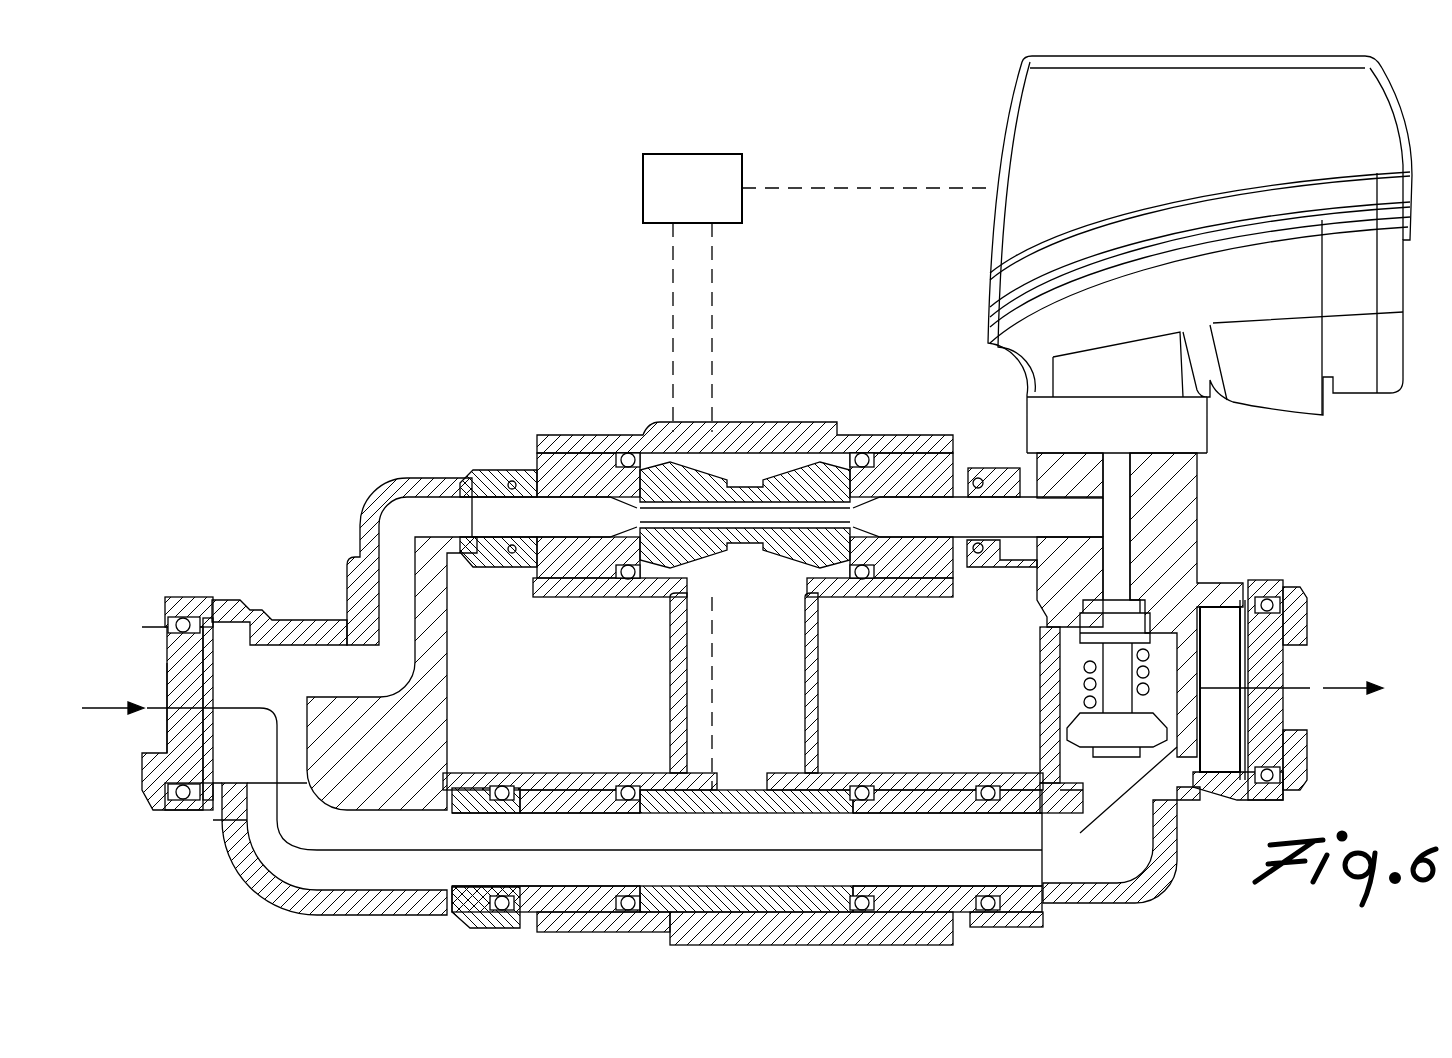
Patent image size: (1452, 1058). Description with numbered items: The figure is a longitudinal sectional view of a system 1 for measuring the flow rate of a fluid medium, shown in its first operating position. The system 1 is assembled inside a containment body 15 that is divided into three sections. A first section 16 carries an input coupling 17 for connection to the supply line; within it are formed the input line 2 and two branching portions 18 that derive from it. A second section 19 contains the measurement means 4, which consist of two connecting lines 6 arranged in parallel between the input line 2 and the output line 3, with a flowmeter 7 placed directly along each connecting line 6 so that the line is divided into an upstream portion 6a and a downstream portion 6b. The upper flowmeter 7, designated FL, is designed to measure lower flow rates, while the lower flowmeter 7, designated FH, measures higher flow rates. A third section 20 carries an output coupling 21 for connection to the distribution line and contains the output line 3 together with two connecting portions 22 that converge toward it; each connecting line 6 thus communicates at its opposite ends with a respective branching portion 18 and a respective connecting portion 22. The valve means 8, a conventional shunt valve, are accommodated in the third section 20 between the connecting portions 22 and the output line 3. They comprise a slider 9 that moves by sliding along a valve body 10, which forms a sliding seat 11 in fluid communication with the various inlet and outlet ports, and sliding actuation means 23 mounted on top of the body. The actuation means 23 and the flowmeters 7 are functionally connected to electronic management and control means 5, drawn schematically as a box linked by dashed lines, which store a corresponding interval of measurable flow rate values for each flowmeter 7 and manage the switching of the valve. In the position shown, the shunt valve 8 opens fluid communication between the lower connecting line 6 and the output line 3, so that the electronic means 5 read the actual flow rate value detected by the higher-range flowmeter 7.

The system for measuring the flow rate of a fluid medium 1 is at (425, 340).
The input line 2 is at (230, 660).
The output line 3 is at (1213, 626).
The measurement means 4 is at (534, 352).
The electronic management and control means 5 is at (660, 178).
The connecting lines 6 is at (514, 503).
The upstream portion 6a is at (575, 508).
The downstream portion 6b is at (902, 498).
The flowmeter 7 is at (740, 500).
The valve means 8 is at (1177, 574).
The slider 9 is at (1120, 668).
The valve body 10 is at (1187, 777).
The sliding seat 11 is at (1080, 750).
The containment body 15 is at (350, 485).
The first section 16 is at (202, 882).
The input coupling 17 is at (134, 768).
The branching portions 18 is at (395, 585).
The second section 19 is at (594, 940).
The third section 20 is at (1170, 902).
The output coupling 21 is at (1328, 625).
The connecting portions 22 is at (1055, 510).
The sliding actuation means 23 is at (1420, 174).